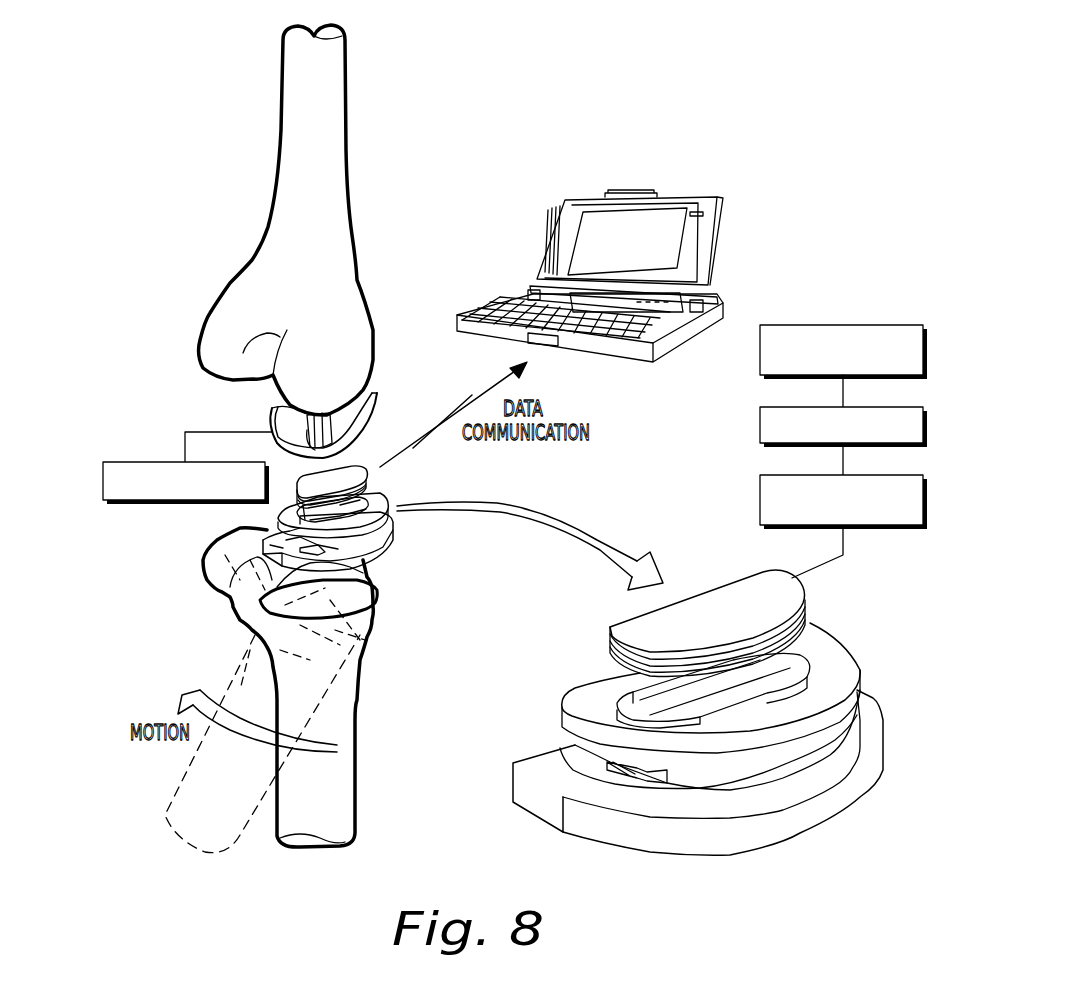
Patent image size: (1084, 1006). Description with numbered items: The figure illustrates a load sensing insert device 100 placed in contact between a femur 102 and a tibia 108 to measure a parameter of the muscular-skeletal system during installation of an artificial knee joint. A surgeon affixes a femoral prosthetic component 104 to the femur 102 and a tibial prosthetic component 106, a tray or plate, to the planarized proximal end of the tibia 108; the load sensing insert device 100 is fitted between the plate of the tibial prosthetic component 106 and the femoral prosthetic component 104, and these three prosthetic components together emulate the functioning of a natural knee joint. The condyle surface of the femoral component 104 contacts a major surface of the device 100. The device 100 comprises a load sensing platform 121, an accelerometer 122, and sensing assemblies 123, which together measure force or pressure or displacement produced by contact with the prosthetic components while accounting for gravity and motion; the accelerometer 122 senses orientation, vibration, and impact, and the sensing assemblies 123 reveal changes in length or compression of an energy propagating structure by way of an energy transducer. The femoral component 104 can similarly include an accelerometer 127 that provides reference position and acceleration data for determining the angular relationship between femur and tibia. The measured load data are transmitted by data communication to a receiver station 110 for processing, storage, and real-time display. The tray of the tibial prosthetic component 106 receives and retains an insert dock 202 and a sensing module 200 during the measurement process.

The load sensing insert device 100 is at (256, 516).
The femur 102 is at (345, 197).
The femoral prosthetic component 104 is at (380, 420).
The tibial prosthetic component 106 is at (640, 707).
The tibia 108 is at (278, 828).
The receiver station 110 is at (698, 193).
The load sensing platform 121 is at (760, 494).
The accelerometer 122 is at (760, 424).
The sensing assemblies 123 is at (760, 352).
The accelerometer 127 is at (150, 462).
The sensing module 200 is at (636, 625).
The insert dock 202 is at (588, 705).